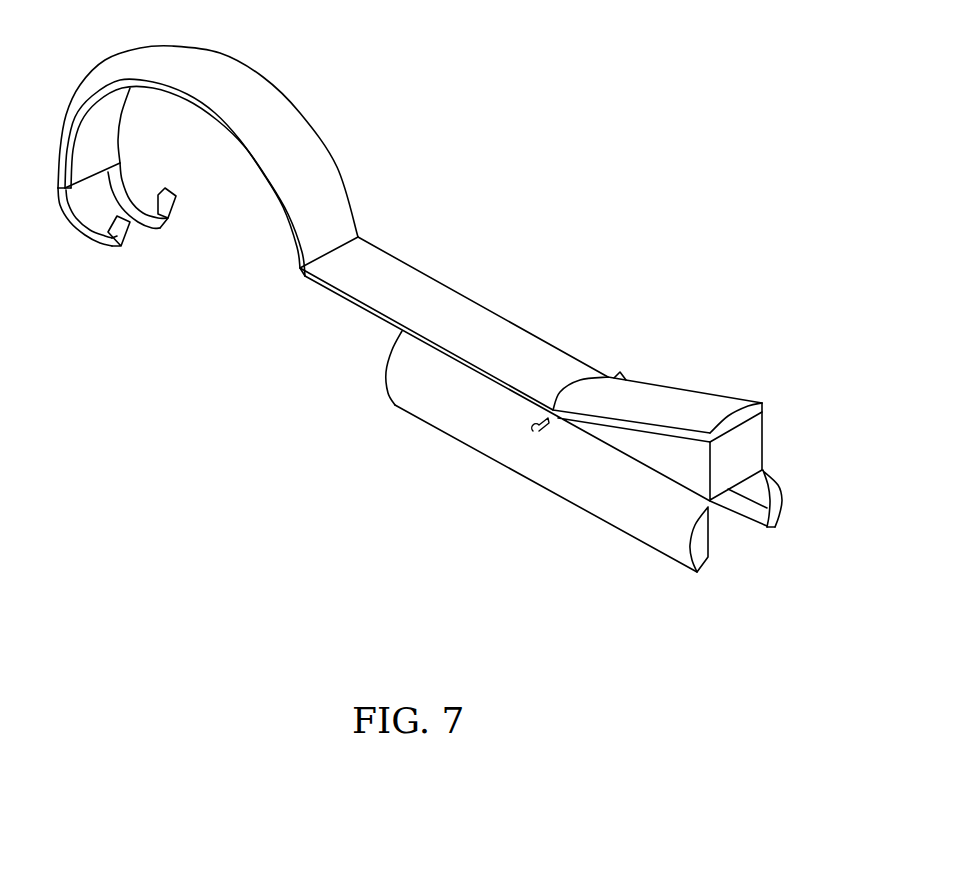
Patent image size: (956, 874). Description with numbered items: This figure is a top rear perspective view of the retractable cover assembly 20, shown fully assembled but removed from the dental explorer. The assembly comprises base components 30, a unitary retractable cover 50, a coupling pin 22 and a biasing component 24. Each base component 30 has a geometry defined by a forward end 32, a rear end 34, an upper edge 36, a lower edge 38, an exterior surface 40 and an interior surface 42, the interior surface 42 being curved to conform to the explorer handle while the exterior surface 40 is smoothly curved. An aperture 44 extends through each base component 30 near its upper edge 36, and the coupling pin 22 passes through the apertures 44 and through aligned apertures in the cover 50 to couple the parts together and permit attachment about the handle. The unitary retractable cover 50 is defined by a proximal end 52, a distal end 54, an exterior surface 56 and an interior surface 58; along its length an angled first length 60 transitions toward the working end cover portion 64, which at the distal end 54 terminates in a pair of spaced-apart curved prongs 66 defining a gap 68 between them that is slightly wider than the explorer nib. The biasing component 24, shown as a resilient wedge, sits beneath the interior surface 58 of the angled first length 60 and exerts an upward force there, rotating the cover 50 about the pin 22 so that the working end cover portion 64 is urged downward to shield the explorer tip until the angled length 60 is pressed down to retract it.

The retractable cover assembly 20 is at (505, 298).
The coupling pin 22 is at (624, 377).
The biasing component 24 is at (747, 450).
The base component 30 is at (620, 512).
The forward end 32 is at (387, 369).
The rear end 34 is at (778, 510).
The upper edge 36 is at (613, 437).
The lower edge 38 is at (768, 534).
The exterior surface 40 is at (440, 402).
The interior surface 42 is at (711, 550).
The aperture 44 is at (538, 420).
The unitary retractable cover 50 is at (330, 287).
The proximal end 52 is at (750, 410).
The distal end 54 is at (117, 260).
The exterior surface 56 is at (410, 280).
The interior surface 58 is at (78, 142).
The angled first length 60 is at (686, 396).
The working end cover portion 64 is at (222, 88).
The curved prongs 66 is at (158, 214).
The gap 68 is at (102, 207).